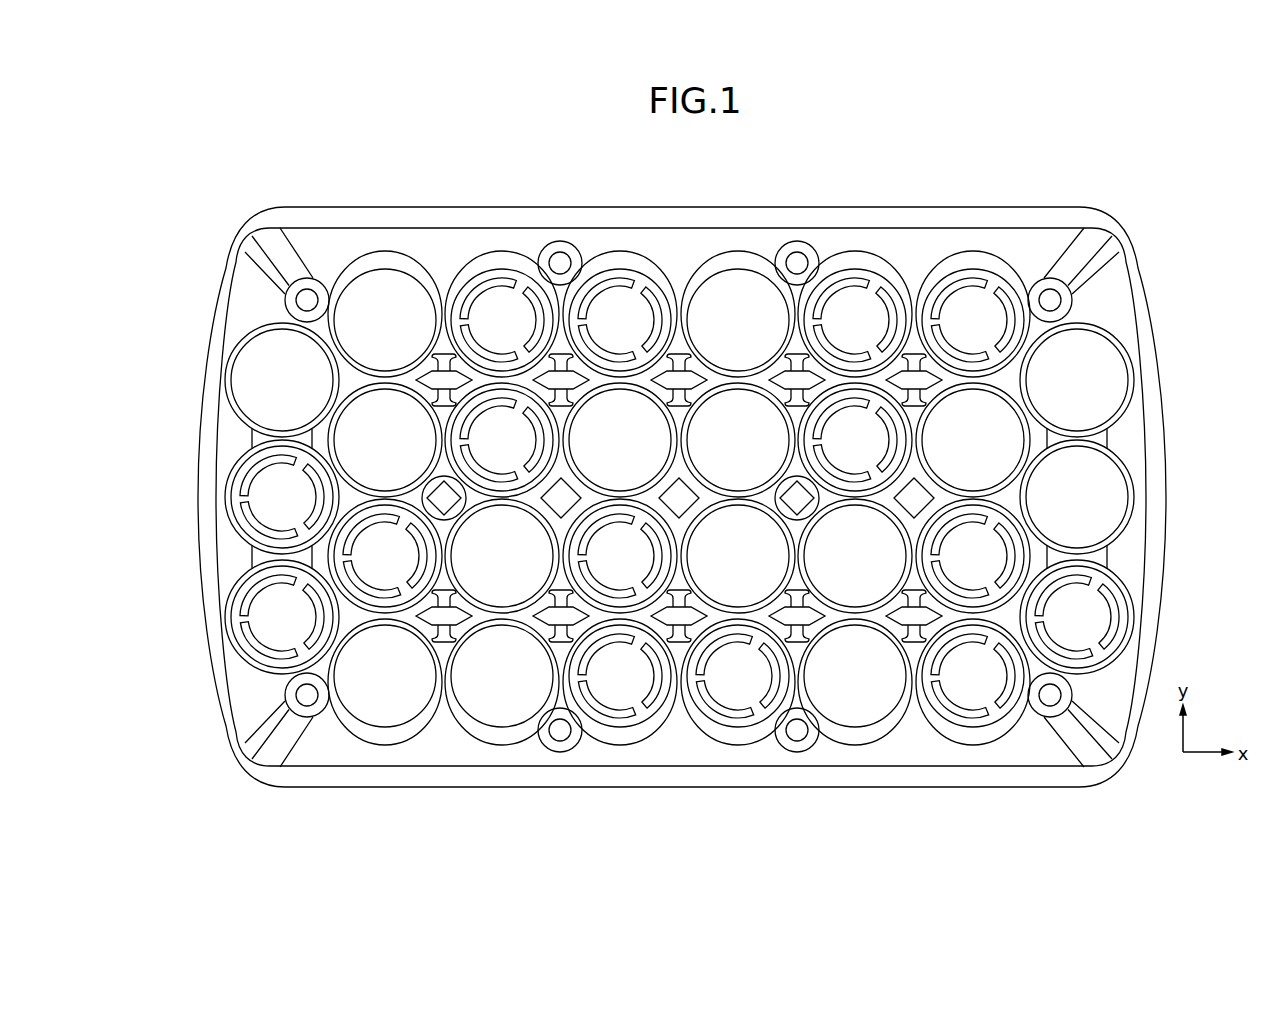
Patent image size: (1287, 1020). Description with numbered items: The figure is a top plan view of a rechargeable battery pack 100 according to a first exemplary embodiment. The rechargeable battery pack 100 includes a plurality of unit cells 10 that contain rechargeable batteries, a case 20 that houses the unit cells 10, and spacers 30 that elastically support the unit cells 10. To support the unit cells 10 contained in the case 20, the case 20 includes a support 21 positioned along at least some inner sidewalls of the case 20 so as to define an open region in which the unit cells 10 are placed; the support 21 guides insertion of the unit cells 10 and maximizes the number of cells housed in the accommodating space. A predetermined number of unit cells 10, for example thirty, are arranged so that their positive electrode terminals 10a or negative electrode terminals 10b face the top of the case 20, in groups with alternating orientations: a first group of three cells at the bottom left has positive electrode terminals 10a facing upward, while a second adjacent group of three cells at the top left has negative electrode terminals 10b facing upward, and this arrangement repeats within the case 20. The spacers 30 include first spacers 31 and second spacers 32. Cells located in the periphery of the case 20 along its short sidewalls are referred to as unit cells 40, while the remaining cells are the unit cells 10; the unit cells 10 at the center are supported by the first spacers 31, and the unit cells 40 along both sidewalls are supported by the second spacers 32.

The rechargeable battery pack 100 is at (343, 150).
The unit cells 10 is at (725, 278).
The positive electrode terminals 10a is at (258, 493).
The negative electrode terminals 10b is at (265, 378).
The case 20 is at (818, 223).
The support 21 is at (410, 262).
The spacers 30 is at (992, 158).
The first spacers 31 is at (937, 358).
The second spacers 32 is at (1068, 430).
The unit cells 40 is at (1102, 468).